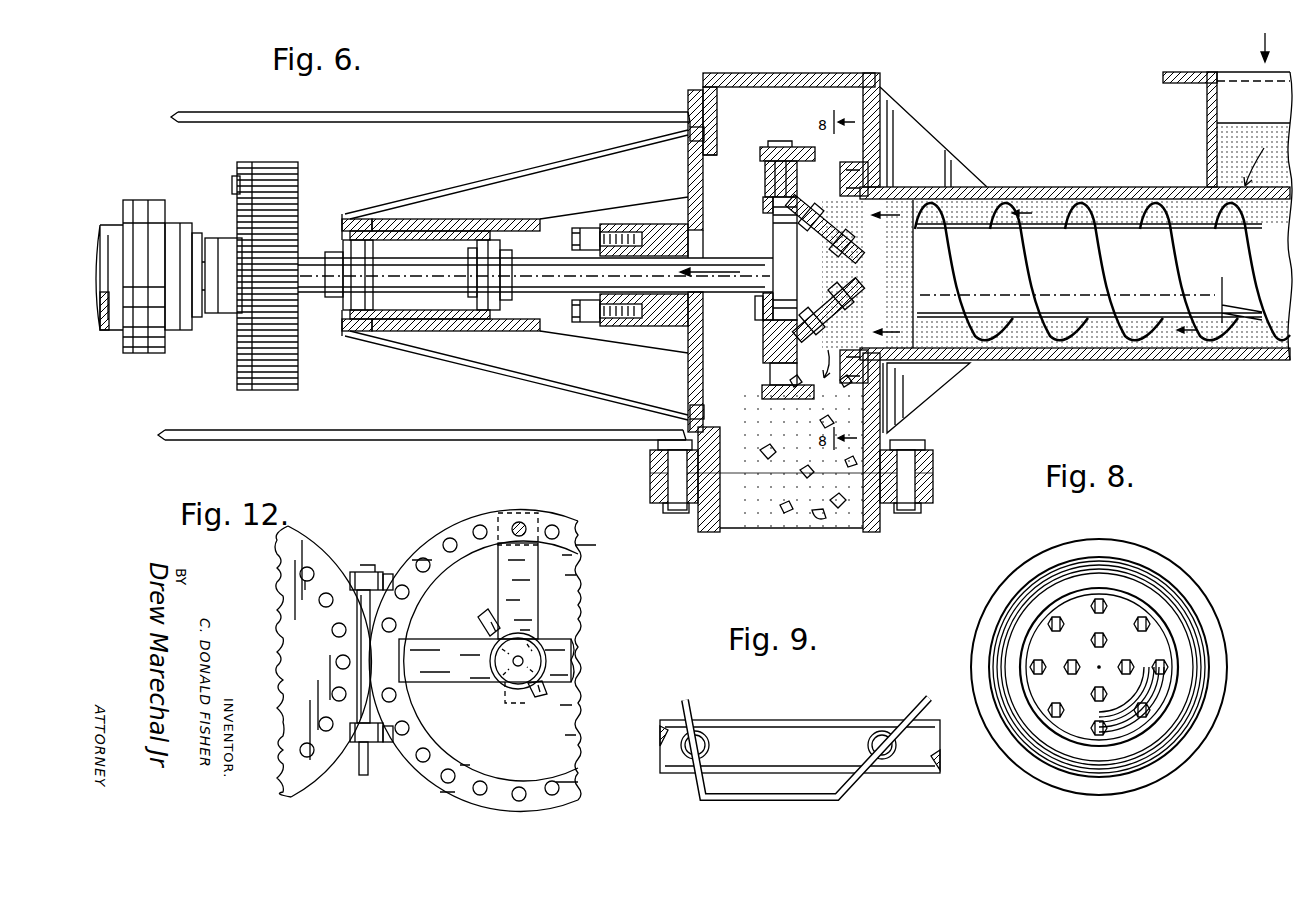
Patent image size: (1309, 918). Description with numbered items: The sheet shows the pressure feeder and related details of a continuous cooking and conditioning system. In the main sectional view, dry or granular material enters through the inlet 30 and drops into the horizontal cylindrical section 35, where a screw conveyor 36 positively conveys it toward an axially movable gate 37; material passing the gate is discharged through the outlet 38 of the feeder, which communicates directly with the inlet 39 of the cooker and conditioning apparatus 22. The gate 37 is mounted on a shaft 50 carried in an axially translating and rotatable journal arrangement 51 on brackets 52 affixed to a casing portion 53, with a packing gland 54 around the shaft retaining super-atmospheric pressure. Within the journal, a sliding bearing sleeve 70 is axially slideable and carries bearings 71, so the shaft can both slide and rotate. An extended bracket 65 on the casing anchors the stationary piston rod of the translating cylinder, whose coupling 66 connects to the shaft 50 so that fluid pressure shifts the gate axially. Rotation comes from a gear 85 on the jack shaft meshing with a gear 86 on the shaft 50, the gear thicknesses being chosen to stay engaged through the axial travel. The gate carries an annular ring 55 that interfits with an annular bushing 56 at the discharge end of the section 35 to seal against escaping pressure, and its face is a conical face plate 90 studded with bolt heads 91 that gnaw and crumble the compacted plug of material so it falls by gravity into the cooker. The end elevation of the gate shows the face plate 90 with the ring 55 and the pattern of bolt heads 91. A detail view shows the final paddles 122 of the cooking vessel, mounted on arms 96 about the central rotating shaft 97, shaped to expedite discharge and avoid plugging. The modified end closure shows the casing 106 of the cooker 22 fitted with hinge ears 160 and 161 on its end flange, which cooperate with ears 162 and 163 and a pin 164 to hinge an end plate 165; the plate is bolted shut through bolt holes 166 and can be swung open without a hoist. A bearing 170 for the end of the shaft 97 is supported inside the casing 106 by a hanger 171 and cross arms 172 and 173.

In FIG. 12, the cooker and conditioning apparatus 22 is at (602, 603).
In FIG. 6, the inlet 30 is at (1238, 77).
In FIG. 6, the horizontal cylindrical section 35 is at (1073, 189).
In FIG. 6, the screw conveyor 36 is at (1130, 358).
In FIG. 6, the gate 37 is at (777, 312).
In FIG. 6, the outlet 38 is at (866, 412).
In FIG. 6, the inlet 39 is at (840, 515).
In FIG. 6, the shaft 50 is at (230, 278).
In FIG. 6, the journal arrangement 51 is at (357, 221).
In FIG. 6, the brackets 52 is at (547, 184).
In FIG. 6, the casing portion 53 is at (699, 94).
In FIG. 6, the packing gland 54 is at (657, 327).
In FIG. 6, the annular ring 55 is at (801, 147).
In FIG. 8, the annular ring 55 is at (996, 587).
In FIG. 6, the annular bushing 56 is at (868, 190).
In FIG. 6, the extended bracket 65 is at (440, 111).
In FIG. 6, the coupling 66 is at (136, 211).
In FIG. 6, the sliding bearing sleeve 70 is at (372, 322).
In FIG. 6, the bearings 71 is at (344, 314).
In FIG. 6, the gear 85 is at (238, 184).
In FIG. 6, the gear 86 is at (292, 178).
In FIG. 6, the conical face plate 90 is at (830, 245).
In FIG. 8, the conical face plate 90 is at (1155, 688).
In FIG. 6, the bolt heads 91 is at (847, 238).
In FIG. 8, the bolt heads 91 is at (1162, 664).
In FIG. 12, the arms 96 is at (490, 620).
In FIG. 9, the arms 96 is at (706, 733).
In FIG. 12, the shaft 97 is at (534, 700).
In FIG. 9, the shaft 97 is at (790, 730).
In FIG. 12, the casing 106 is at (517, 512).
In FIG. 9, the paddles 122 is at (795, 798).
In FIG. 12, the hinge ear 160 is at (366, 571).
In FIG. 12, the hinge ear 161 is at (391, 745).
In FIG. 12, the cooperating ear 162 is at (352, 586).
In FIG. 12, the cooperating ear 163 is at (352, 745).
In FIG. 12, the pin 164 is at (362, 777).
In FIG. 12, the end plate 165 is at (312, 542).
In FIG. 12, the bolt holes 166 is at (518, 786).
In FIG. 12, the bearing 170 is at (503, 675).
In FIG. 12, the hanger 171 is at (500, 566).
In FIG. 12, the cross arm 172 is at (443, 650).
In FIG. 12, the cross arm 173 is at (571, 661).